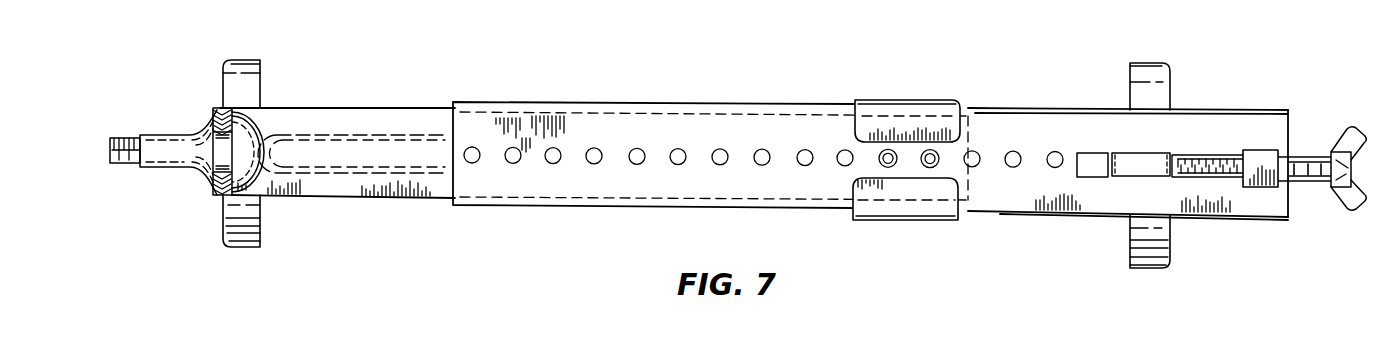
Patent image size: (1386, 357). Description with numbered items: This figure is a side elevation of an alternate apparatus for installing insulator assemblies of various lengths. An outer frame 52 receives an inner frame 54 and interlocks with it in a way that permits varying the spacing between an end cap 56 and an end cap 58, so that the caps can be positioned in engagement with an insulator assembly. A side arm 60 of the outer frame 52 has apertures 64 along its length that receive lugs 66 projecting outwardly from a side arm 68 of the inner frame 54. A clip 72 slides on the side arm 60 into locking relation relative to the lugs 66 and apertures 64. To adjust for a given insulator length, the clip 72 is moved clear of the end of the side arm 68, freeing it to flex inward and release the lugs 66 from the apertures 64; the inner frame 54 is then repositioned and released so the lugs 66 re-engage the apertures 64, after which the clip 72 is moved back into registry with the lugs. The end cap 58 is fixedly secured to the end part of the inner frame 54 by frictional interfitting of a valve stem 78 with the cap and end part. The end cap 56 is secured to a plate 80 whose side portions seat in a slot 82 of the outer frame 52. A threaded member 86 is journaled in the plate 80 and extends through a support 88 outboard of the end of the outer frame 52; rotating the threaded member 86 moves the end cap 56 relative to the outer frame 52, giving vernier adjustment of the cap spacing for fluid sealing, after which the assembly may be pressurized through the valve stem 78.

The outer frame 52 is at (1228, 104).
The inner frame 54 is at (330, 100).
The end cap 56 is at (1148, 62).
The end cap 58 is at (243, 60).
The side arm 60 is at (592, 208).
The apertures 64 is at (718, 163).
The lugs 66 is at (930, 167).
The side arm 68 is at (320, 190).
The clip 72 is at (893, 103).
The valve stem 78 is at (178, 167).
The plate 80 is at (1148, 164).
The slot 82 is at (1088, 164).
The threaded member 86 is at (1316, 182).
The support 88 is at (1268, 158).